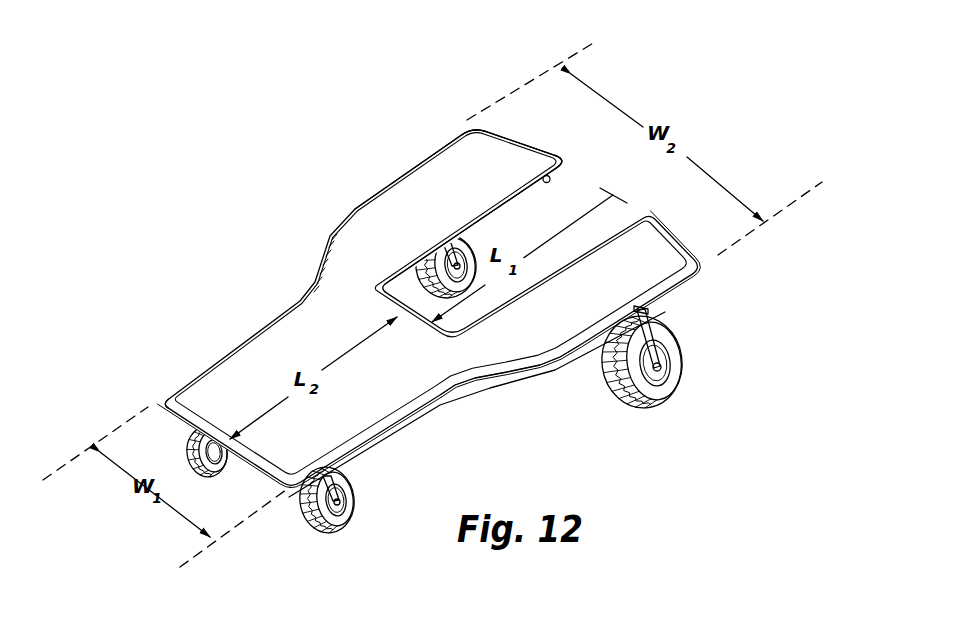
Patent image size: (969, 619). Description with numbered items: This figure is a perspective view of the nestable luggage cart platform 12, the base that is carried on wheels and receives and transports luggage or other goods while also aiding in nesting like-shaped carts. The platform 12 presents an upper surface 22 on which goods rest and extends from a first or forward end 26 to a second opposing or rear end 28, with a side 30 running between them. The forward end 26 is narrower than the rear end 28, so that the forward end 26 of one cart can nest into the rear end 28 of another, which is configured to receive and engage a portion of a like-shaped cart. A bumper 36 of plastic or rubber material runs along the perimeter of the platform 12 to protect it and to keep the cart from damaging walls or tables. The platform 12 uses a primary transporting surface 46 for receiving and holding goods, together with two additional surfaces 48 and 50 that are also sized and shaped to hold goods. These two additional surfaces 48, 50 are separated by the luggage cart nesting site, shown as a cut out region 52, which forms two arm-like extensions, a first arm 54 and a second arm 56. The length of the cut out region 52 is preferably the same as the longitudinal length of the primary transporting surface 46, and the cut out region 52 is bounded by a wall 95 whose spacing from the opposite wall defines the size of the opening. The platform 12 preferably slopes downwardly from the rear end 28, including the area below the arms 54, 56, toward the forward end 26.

The platform 12 is at (217, 213).
The upper surface 22 is at (288, 316).
The first end 26 is at (164, 412).
The second opposing end 28 is at (525, 142).
The side 30 is at (397, 425).
The bumper 36 is at (490, 385).
The primary transporting surface 46 is at (240, 355).
The additional surface 48 is at (427, 173).
The additional surface 50 is at (645, 278).
The cut out region 52 is at (545, 218).
The first arm 54 is at (462, 135).
The second arm 56 is at (636, 294).
The wall 95 is at (418, 266).